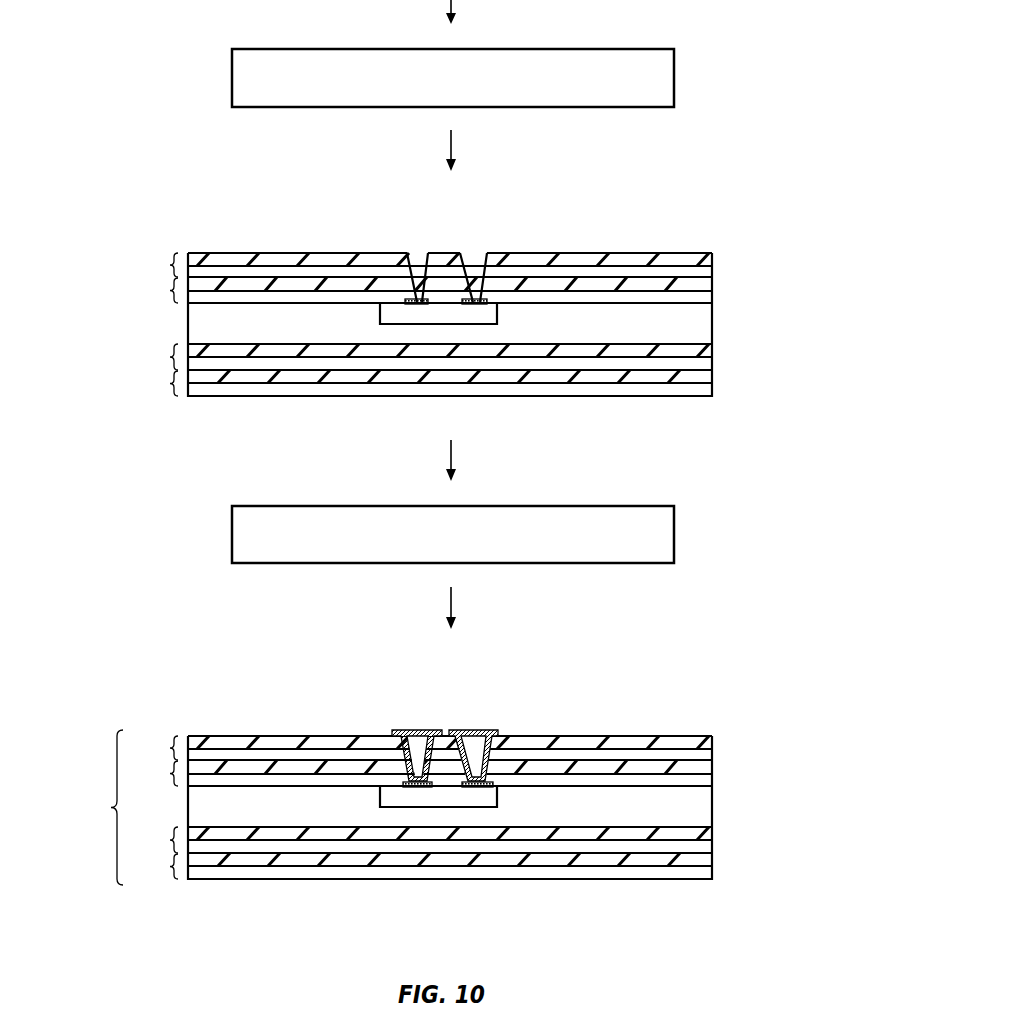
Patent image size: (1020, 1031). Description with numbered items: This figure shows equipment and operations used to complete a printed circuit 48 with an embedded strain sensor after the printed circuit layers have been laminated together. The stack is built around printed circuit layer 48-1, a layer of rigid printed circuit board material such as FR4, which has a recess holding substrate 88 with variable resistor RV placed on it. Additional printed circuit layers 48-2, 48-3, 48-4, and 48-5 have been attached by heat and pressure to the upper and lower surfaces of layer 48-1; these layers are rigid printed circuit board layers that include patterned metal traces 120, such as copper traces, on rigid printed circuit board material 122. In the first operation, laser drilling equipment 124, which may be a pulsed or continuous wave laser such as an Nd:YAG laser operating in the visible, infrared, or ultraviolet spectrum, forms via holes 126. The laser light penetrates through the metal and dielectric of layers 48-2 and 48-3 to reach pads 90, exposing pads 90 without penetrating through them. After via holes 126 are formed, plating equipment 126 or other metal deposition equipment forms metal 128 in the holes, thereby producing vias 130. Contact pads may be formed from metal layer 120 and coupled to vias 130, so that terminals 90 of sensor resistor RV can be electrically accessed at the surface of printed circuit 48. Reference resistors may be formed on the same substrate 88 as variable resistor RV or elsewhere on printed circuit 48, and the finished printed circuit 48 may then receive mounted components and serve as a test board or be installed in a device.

The laser drilling equipment 124 is at (674, 75).
The via holes 126 is at (674, 532).
The pads 90 is at (489, 786).
The substrate 88 is at (416, 903).
The metal traces 120 is at (746, 390).
The rigid printed circuit board material 122 is at (746, 412).
The printed circuit layer 48-1 is at (746, 811).
The printed circuit layer 48-2 is at (154, 506).
The printed circuit layer 48-3 is at (154, 532).
The printed circuit layer 48-4 is at (154, 598).
The printed circuit layer 48-5 is at (154, 625).
The printed circuit 48 is at (105, 807).
The metal 128 is at (493, 729).
The vias 130 is at (473, 714).
The variable resistor RV is at (372, 795).